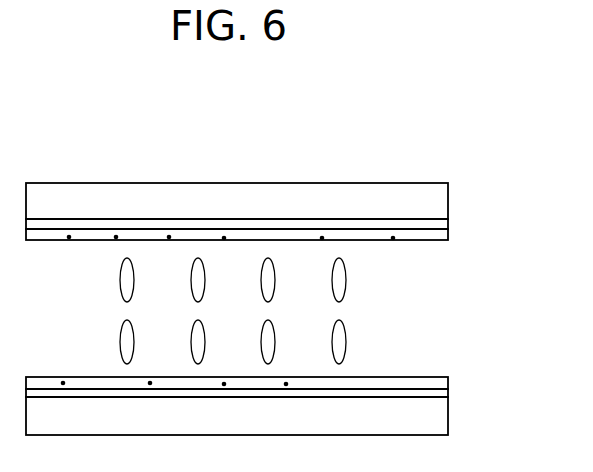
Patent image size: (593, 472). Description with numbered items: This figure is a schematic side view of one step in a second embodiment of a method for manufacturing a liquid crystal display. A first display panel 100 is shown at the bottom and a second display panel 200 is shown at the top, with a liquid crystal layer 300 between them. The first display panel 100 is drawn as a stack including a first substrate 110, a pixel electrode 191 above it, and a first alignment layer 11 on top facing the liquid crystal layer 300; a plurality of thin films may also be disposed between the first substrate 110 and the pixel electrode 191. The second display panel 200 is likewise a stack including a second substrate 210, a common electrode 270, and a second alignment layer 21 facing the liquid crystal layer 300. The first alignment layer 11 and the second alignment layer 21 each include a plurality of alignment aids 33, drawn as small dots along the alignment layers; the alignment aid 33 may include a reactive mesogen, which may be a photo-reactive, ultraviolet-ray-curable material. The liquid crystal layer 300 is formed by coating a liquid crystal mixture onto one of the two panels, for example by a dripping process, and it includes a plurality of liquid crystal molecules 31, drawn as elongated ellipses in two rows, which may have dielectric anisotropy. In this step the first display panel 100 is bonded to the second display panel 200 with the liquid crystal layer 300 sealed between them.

The first display panel 100 is at (292, 397).
The first substrate 110 is at (437, 422).
The pixel electrode 191 is at (437, 395).
The first alignment layer 11 is at (438, 385).
The second display panel 200 is at (292, 225).
The second substrate 210 is at (436, 198).
The common electrode 270 is at (437, 223).
The second alignment layer 21 is at (267, 248).
The liquid crystal layer 300 is at (286, 309).
The liquid crystal molecules 31 is at (121, 271).
The alignment aid 33 is at (69, 237).